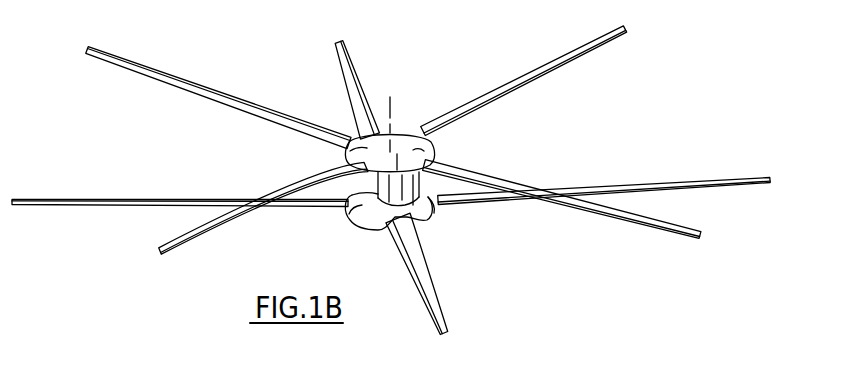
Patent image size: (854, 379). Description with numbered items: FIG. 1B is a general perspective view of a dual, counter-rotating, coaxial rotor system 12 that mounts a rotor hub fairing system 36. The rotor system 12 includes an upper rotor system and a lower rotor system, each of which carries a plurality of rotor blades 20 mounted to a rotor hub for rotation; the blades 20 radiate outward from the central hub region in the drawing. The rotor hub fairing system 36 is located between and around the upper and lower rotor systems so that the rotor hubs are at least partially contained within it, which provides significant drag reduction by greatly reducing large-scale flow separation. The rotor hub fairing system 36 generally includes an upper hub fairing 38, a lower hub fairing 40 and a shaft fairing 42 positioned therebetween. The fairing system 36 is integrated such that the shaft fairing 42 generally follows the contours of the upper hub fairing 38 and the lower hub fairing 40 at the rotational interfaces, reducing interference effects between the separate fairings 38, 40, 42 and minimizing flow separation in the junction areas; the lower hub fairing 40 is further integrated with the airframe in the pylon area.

The counter-rotating coaxial rotor system 12 is at (278, 54).
The rotor blades 20 is at (513, 88).
The rotor hub fairing system 36 is at (329, 163).
The upper hub fairing 38 is at (418, 134).
The lower hub fairing 40 is at (363, 225).
The shaft fairing 42 is at (425, 198).